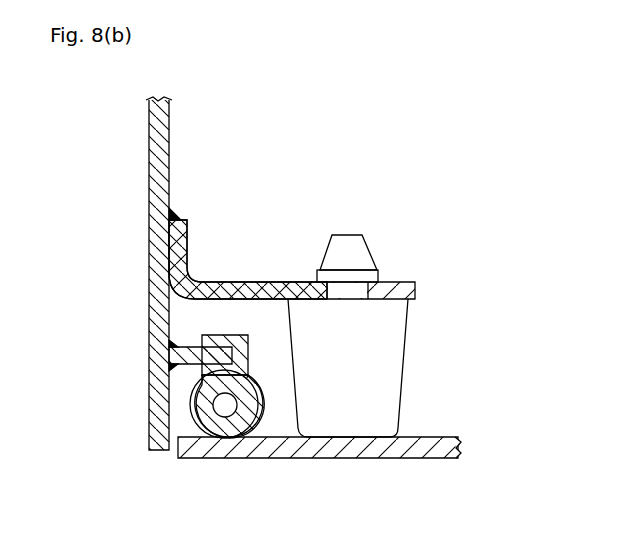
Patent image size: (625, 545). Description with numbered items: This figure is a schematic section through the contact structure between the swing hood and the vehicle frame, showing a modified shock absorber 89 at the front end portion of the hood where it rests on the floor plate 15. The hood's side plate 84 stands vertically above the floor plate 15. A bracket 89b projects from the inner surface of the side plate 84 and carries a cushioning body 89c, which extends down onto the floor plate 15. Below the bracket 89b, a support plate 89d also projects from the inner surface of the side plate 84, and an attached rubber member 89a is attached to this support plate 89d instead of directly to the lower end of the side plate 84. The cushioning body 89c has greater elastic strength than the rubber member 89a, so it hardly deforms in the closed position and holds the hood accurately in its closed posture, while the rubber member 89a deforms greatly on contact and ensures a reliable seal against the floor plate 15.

The side panel 84 is at (149, 183).
The shock absorber 89 is at (440, 246).
The bracket 89b is at (244, 282).
The cushioning body 89c is at (397, 373).
The support plate 89d is at (223, 355).
The attached rubber member 89a is at (250, 415).
The floor plate 15 is at (405, 458).